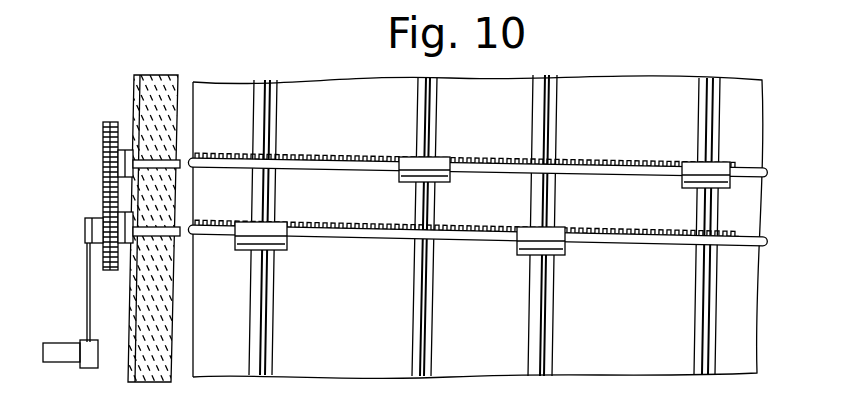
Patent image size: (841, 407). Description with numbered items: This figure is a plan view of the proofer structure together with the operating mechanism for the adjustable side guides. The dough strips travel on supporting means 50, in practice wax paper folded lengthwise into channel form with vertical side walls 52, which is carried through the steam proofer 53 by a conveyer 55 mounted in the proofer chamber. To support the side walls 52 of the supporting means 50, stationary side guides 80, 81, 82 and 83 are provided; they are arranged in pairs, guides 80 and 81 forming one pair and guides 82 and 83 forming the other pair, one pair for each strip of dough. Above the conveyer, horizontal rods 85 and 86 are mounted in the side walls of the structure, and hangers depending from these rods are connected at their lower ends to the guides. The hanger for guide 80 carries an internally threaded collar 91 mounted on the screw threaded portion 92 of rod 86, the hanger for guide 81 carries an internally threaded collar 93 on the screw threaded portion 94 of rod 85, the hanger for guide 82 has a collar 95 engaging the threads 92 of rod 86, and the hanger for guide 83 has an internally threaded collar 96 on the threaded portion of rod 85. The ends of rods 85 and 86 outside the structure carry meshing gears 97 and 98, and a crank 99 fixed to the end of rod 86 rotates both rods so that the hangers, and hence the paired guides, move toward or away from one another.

The supporting means 50 is at (478, 227).
The vertical side walls 52 is at (277, 132).
The steam proofer 53 is at (157, 80).
The conveyer 55 is at (237, 86).
The side guide 80 is at (263, 122).
The side guide 81 is at (431, 112).
The side guide 82 is at (541, 112).
The side guide 83 is at (716, 92).
The horizontal rod 85 is at (478, 185).
The horizontal rod 86 is at (477, 249).
The internally threaded collar 91 is at (278, 226).
The screw threaded portion 92 is at (477, 263).
The internally threaded collar 93 is at (440, 158).
The screw threaded portion 94 is at (478, 187).
The collar 95 is at (562, 228).
The internally threaded collar 96 is at (697, 189).
The gear 97 is at (103, 136).
The gear 98 is at (113, 272).
The crank 99 is at (64, 360).